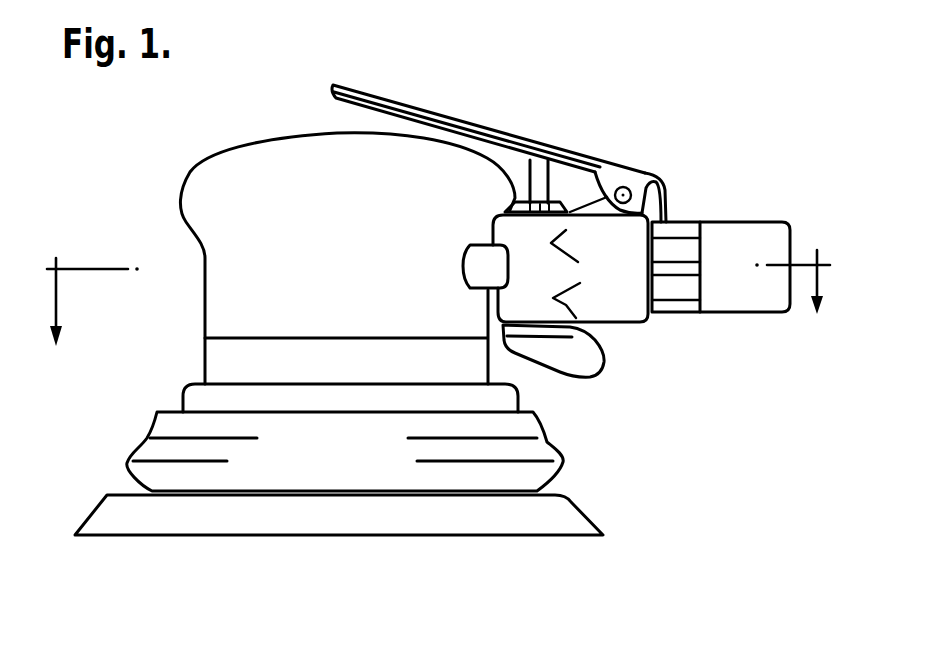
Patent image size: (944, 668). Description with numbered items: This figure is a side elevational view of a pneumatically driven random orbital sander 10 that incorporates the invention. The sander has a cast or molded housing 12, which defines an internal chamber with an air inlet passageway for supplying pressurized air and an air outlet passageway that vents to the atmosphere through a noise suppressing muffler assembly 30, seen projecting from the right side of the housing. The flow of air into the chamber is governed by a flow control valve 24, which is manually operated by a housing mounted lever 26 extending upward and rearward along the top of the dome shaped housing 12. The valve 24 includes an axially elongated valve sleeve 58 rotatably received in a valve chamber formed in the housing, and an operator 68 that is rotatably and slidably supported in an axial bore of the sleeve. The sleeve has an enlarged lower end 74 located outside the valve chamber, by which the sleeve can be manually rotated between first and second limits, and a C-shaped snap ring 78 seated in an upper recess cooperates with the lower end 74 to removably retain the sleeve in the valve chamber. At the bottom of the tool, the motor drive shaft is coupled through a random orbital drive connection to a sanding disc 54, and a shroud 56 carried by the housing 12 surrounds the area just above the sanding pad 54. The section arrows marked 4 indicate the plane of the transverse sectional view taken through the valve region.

The random orbital sander 10 is at (170, 162).
The housing 12 is at (194, 304).
The flow control valve 24 is at (614, 381).
The lever 26 is at (470, 120).
The muffler assembly 30 is at (712, 206).
The sanding disc 54 is at (577, 518).
The shroud 56 is at (563, 458).
The valve sleeve 58 is at (565, 207).
The operator 68 is at (522, 176).
The enlarged lower end 74 is at (597, 362).
The C-shaped snap ring 78 is at (592, 178).
The section line 4- 4 is at (438, 283).